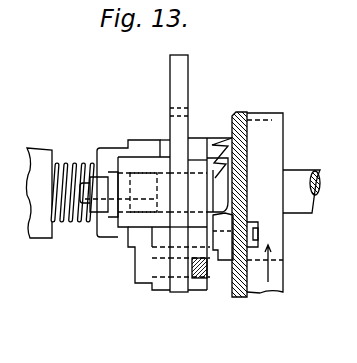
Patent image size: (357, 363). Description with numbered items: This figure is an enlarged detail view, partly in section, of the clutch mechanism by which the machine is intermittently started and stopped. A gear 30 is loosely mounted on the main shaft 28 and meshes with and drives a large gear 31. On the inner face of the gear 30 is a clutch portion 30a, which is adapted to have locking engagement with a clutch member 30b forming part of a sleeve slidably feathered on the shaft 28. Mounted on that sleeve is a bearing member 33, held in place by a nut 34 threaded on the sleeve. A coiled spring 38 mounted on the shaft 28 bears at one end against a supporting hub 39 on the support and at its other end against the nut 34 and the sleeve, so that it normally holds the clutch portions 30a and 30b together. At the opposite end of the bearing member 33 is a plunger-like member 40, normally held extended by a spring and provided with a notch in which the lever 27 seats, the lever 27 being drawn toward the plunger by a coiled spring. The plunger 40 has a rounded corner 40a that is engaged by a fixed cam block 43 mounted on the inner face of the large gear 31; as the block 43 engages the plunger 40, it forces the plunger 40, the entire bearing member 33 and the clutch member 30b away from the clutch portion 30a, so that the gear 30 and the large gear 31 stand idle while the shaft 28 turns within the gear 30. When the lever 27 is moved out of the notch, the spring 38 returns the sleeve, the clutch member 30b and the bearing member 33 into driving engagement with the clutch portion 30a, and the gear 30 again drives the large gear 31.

The lever 27 is at (177, 77).
The main shaft 28 is at (297, 195).
The gear 30 is at (272, 120).
The clutch portion 30a is at (227, 140).
The clutch member 30b is at (207, 153).
The large gear 31 is at (275, 115).
The bearing member 33 is at (167, 148).
The nut 34 is at (137, 157).
The coiled spring 38 is at (65, 170).
The supporting hub 39 is at (37, 160).
The plunger-like member 40 is at (213, 192).
The rounded corner 40a is at (257, 225).
The fixed cam block 43 is at (228, 245).